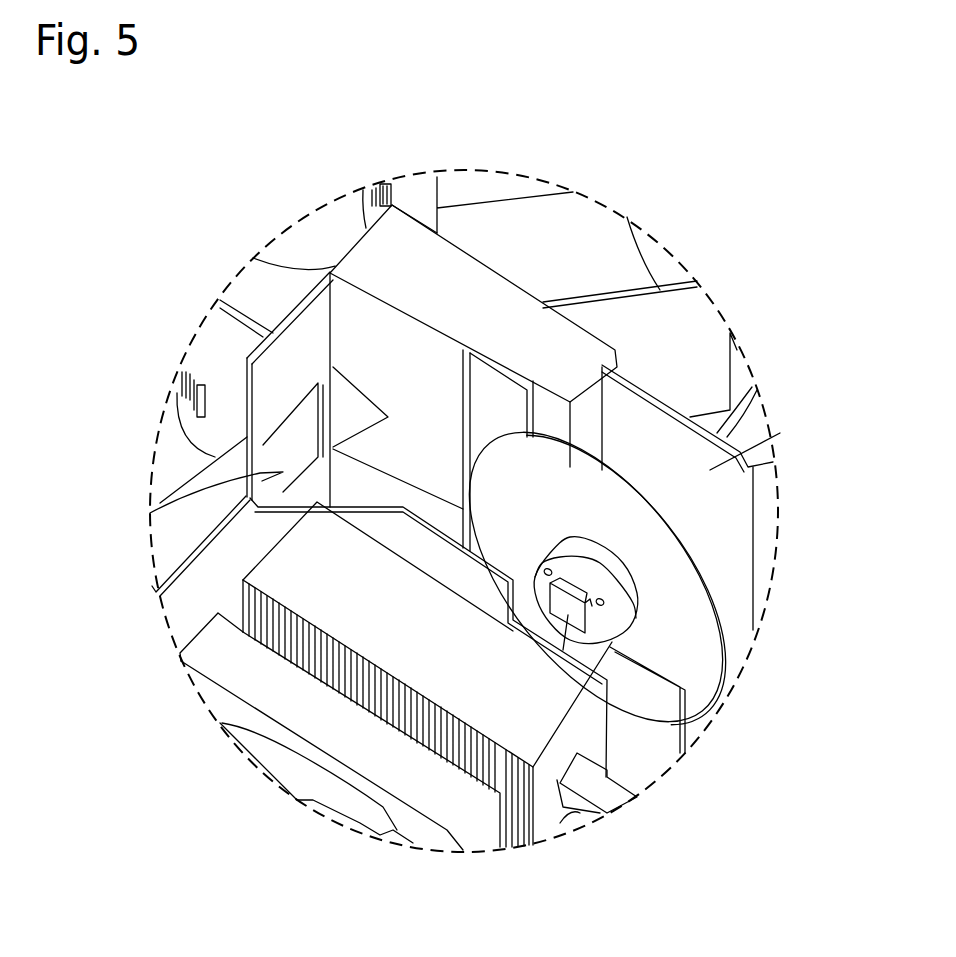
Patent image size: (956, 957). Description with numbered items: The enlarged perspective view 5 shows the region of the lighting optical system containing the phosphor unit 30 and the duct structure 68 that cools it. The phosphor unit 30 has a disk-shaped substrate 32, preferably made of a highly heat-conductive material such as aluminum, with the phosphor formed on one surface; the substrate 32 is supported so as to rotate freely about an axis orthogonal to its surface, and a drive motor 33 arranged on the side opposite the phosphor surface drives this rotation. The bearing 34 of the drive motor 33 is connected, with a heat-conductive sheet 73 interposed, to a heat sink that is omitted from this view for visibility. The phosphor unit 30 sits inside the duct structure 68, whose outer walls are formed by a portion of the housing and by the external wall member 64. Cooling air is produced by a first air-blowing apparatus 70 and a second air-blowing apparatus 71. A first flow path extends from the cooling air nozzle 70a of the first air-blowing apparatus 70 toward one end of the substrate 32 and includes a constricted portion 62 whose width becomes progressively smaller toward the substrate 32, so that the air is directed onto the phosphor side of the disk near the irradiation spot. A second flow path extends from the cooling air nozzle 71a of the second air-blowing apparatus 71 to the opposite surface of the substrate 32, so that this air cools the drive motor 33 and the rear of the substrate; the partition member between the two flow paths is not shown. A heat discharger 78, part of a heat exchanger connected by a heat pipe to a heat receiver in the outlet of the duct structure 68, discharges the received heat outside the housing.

The image forming apparatus 5 is at (378, 523).
The phosphor unit 30 is at (673, 517).
The substrate 32 is at (687, 553).
The drive motor 33 is at (620, 593).
The bearing 34 is at (573, 587).
The constricted portion 62 is at (410, 470).
The external wall member 64 is at (614, 478).
The duct structure 68 is at (393, 368).
The first air-blowing apparatus 70 is at (250, 282).
The cooling air nozzle 70a is at (345, 404).
The second air-blowing apparatus 71 is at (210, 340).
The cooling air nozzle 71a is at (250, 493).
The heat-conductive sheet 73 is at (567, 613).
The heat discharger 78 is at (460, 663).